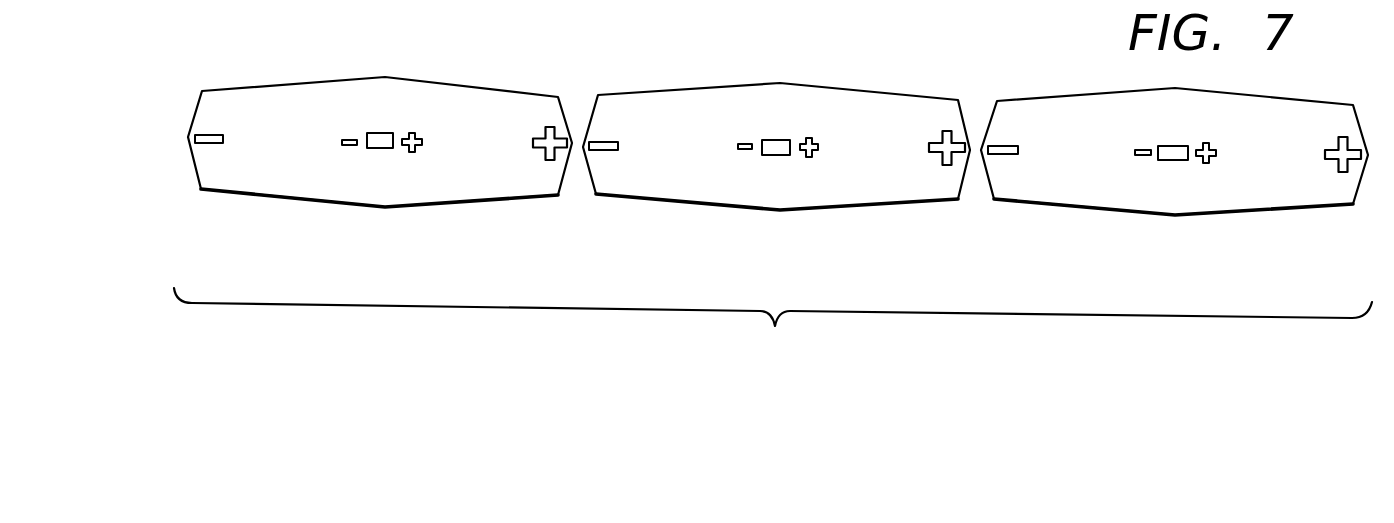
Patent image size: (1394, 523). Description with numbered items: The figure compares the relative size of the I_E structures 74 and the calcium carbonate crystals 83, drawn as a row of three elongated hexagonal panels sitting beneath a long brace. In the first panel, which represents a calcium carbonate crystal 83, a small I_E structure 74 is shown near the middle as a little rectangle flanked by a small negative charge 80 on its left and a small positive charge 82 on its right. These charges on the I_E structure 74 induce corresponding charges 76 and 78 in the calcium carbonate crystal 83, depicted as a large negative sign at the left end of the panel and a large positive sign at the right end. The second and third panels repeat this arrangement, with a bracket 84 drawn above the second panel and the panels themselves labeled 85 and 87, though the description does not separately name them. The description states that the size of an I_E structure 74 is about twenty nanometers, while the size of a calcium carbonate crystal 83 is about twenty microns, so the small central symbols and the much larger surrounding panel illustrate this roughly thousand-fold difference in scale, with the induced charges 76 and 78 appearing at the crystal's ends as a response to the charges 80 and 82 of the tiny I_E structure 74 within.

The I_E structure 74 is at (378, 133).
The induced charge 76 is at (212, 135).
The induced charge 78 is at (550, 127).
The negative charge 80 is at (350, 145).
The positive charge 82 is at (412, 152).
The calcium carbonate crystal 83 is at (225, 172).
The second panel assembly 84 is at (776, 158).
The second panel 85 is at (674, 178).
The third panel 87 is at (1060, 192).